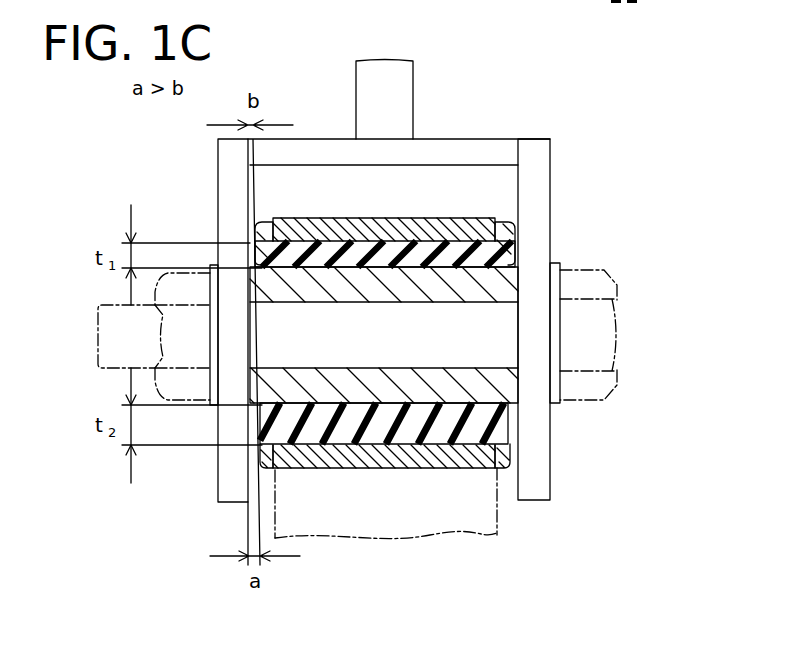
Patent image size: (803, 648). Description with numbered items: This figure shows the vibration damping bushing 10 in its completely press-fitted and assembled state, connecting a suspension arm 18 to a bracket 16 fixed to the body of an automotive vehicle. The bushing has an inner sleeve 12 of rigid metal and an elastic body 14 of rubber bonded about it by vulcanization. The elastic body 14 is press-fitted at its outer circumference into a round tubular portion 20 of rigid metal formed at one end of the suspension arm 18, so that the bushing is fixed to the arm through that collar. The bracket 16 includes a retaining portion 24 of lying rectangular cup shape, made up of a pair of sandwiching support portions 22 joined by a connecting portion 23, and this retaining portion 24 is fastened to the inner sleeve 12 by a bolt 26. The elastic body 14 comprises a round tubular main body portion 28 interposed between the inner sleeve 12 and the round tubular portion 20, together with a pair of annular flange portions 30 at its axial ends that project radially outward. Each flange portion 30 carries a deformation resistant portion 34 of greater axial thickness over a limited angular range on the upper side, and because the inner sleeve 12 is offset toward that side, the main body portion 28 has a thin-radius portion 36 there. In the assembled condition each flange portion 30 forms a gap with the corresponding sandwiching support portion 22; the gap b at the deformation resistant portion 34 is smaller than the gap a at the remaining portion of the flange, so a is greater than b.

The vibration damping bushing 10 is at (400, 337).
The inner sleeve 12 is at (510, 387).
The elastic body 14 is at (507, 427).
The bracket 16 is at (446, 92).
The suspension arm 18 is at (501, 520).
The round tubular portion 20 is at (421, 216).
The sandwiching support portions 22 is at (224, 181).
The connecting portion 23 is at (328, 150).
The retaining portion 24 is at (503, 135).
The bolt 26 is at (592, 331).
The main body portion 28 is at (390, 437).
The flange portions 30 is at (265, 459).
The deformation resistant portion 34 is at (252, 238).
The thin-radius portion 36 is at (352, 247).